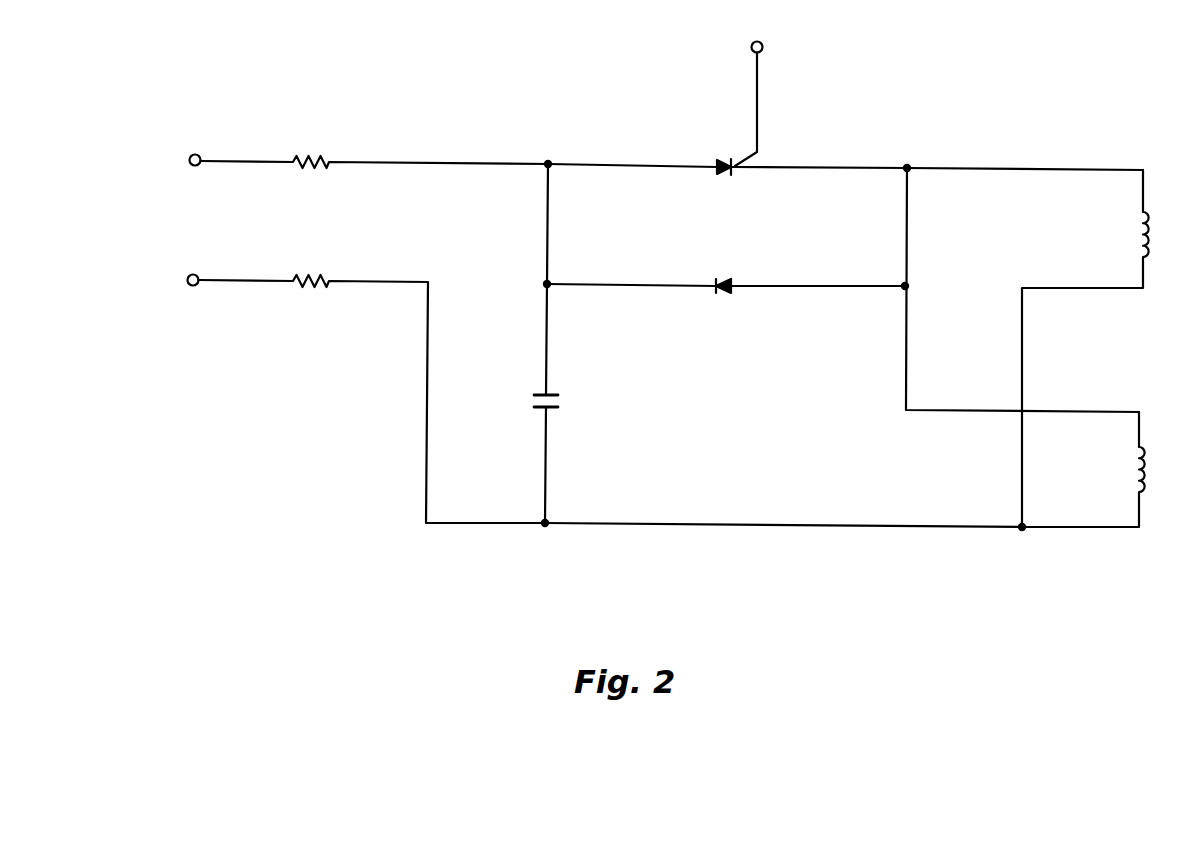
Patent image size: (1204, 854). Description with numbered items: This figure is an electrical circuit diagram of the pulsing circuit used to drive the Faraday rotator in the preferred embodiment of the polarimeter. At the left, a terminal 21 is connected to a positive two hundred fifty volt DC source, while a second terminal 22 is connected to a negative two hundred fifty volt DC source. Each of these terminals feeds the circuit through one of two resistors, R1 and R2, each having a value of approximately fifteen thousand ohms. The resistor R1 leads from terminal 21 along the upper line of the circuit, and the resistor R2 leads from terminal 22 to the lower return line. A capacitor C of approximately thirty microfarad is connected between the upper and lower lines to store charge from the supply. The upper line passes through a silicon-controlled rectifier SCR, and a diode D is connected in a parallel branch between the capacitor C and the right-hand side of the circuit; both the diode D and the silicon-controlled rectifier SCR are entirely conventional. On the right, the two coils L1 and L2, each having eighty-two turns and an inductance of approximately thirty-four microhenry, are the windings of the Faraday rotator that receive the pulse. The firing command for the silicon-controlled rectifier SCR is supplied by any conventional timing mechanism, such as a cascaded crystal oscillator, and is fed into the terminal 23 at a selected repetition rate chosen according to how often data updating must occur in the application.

The terminal 21 is at (195, 154).
The terminal 22 is at (194, 274).
The terminal 23 is at (763, 47).
The resistor R1 is at (375, 151).
The resistor R2 is at (611, 390).
The silicon-controlled rectifier SCR is at (845, 114).
The diode D is at (726, 274).
The capacitor C is at (556, 343).
The coil L1 is at (1100, 348).
The coil L2 is at (1099, 469).